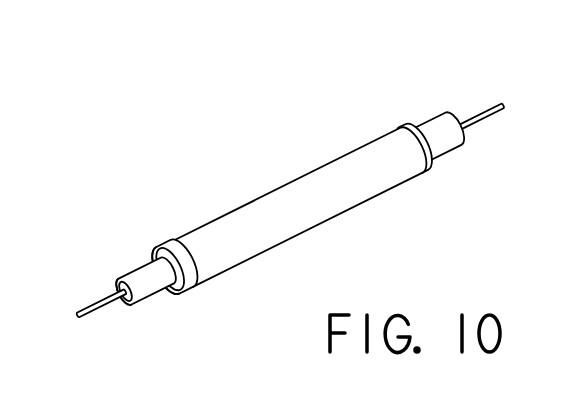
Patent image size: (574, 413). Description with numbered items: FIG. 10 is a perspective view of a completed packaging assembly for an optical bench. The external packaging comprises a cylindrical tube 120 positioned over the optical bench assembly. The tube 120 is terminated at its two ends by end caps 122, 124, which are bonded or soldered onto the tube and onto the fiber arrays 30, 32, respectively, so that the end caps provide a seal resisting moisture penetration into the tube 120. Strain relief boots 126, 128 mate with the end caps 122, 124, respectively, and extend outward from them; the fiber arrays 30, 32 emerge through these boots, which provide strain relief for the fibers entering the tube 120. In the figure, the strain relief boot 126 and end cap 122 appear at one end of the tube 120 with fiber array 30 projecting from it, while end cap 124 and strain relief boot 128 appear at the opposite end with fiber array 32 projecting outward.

The fiber array 30 is at (110, 356).
The fiber array 32 is at (500, 197).
The cylindrical tube 120 is at (257, 197).
The end cap 122 is at (158, 246).
The end cap 124 is at (403, 124).
The strain relief boot 126 is at (118, 273).
The strain relief boot 128 is at (470, 54).